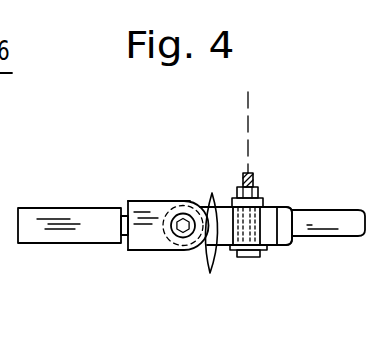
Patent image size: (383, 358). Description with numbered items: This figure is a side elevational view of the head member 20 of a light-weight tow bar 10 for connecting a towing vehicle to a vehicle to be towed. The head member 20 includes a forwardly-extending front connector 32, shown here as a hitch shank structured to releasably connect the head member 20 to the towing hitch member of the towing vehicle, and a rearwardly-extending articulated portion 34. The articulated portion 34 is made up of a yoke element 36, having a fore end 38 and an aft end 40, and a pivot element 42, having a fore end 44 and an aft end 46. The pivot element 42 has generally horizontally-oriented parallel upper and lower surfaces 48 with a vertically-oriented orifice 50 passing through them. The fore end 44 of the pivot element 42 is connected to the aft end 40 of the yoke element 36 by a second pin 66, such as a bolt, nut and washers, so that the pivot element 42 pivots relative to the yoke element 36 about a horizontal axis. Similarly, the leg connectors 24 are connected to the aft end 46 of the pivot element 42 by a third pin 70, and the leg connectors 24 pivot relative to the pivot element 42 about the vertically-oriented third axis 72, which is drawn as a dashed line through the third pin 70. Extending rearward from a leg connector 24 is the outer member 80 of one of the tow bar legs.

The tow bar 10 is at (287, 76).
The head member 20 is at (123, 146).
The leg connectors 24 is at (283, 207).
The front connector 32 is at (60, 208).
The articulated portion 34 is at (244, 298).
The yoke element 36 is at (135, 250).
The fore end 38 is at (133, 202).
The aft end 40 is at (188, 201).
The pivot element 42 is at (262, 240).
The fore end 44 is at (202, 245).
The aft end 46 is at (228, 215).
The upper and lower surfaces 48 is at (210, 248).
The orifice 50 is at (240, 234).
The second pin 66 is at (180, 213).
The third pin 70 is at (250, 173).
The third axis 72 is at (249, 127).
The outer member 80 is at (348, 221).